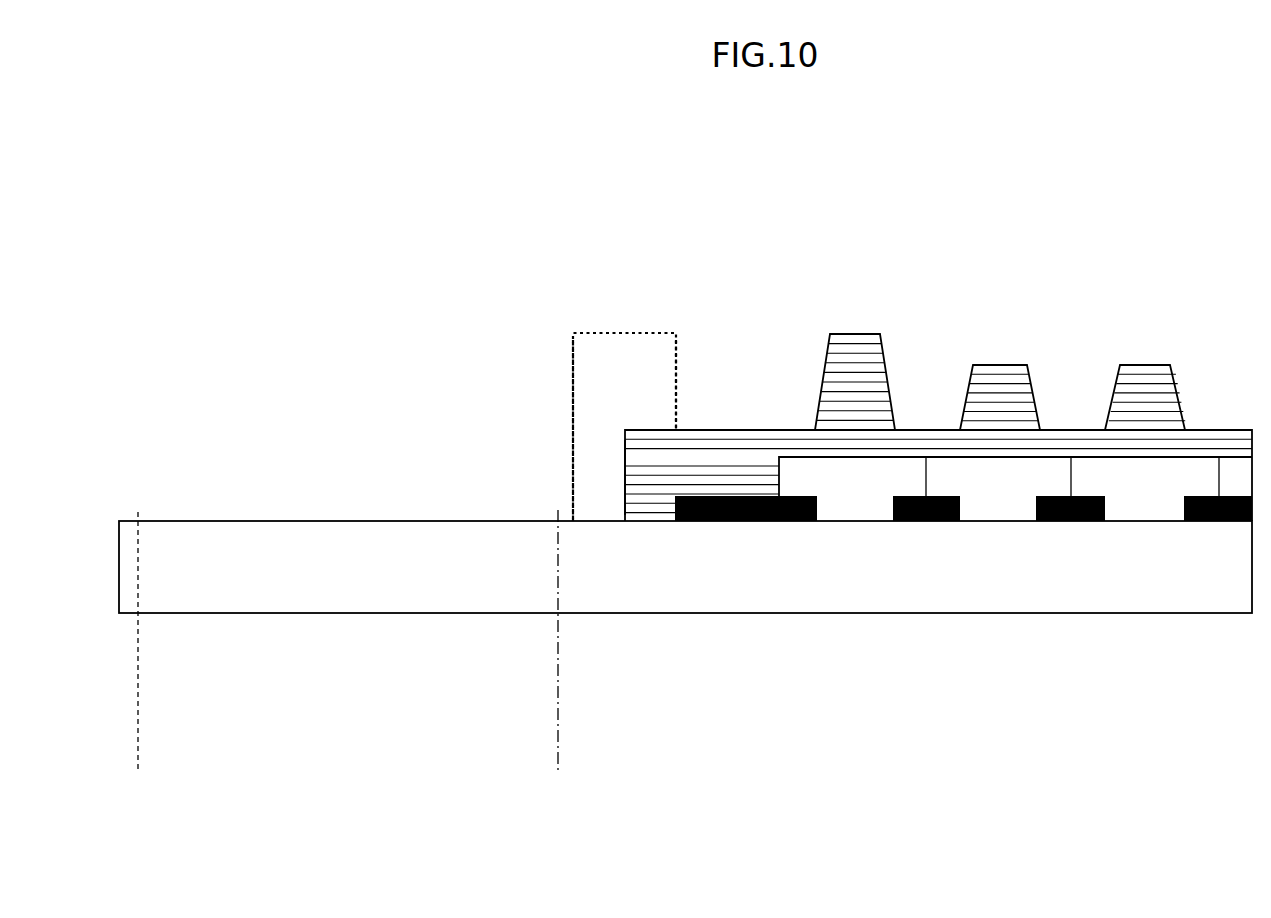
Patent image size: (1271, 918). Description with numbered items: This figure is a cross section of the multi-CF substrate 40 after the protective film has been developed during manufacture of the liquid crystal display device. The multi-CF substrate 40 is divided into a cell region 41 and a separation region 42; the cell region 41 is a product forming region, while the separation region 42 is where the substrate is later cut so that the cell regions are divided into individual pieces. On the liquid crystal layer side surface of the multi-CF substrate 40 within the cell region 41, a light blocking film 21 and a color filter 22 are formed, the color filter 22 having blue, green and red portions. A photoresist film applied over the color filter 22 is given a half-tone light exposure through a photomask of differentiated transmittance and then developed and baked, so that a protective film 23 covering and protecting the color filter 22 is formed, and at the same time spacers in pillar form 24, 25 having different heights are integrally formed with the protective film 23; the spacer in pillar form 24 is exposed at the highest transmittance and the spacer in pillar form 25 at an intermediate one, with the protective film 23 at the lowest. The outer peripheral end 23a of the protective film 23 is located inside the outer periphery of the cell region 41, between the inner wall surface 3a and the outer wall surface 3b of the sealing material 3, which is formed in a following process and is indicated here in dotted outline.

The sealing material 3 is at (599, 350).
The inner wall surface of the sealing material 3a is at (676, 353).
The outer wall surface of the sealing material 3b is at (573, 389).
The light blocking film 21 is at (745, 522).
The color filter 22 is at (855, 505).
The protective film 23 is at (754, 455).
The outer peripheral end of the protective film 23a is at (625, 477).
The spacer in pillar form 24 is at (855, 350).
The spacer in pillar form 25 is at (1001, 377).
The multi-CF substrate 40 is at (333, 575).
The cell region 41 is at (558, 745).
The separation region 42 is at (558, 745).